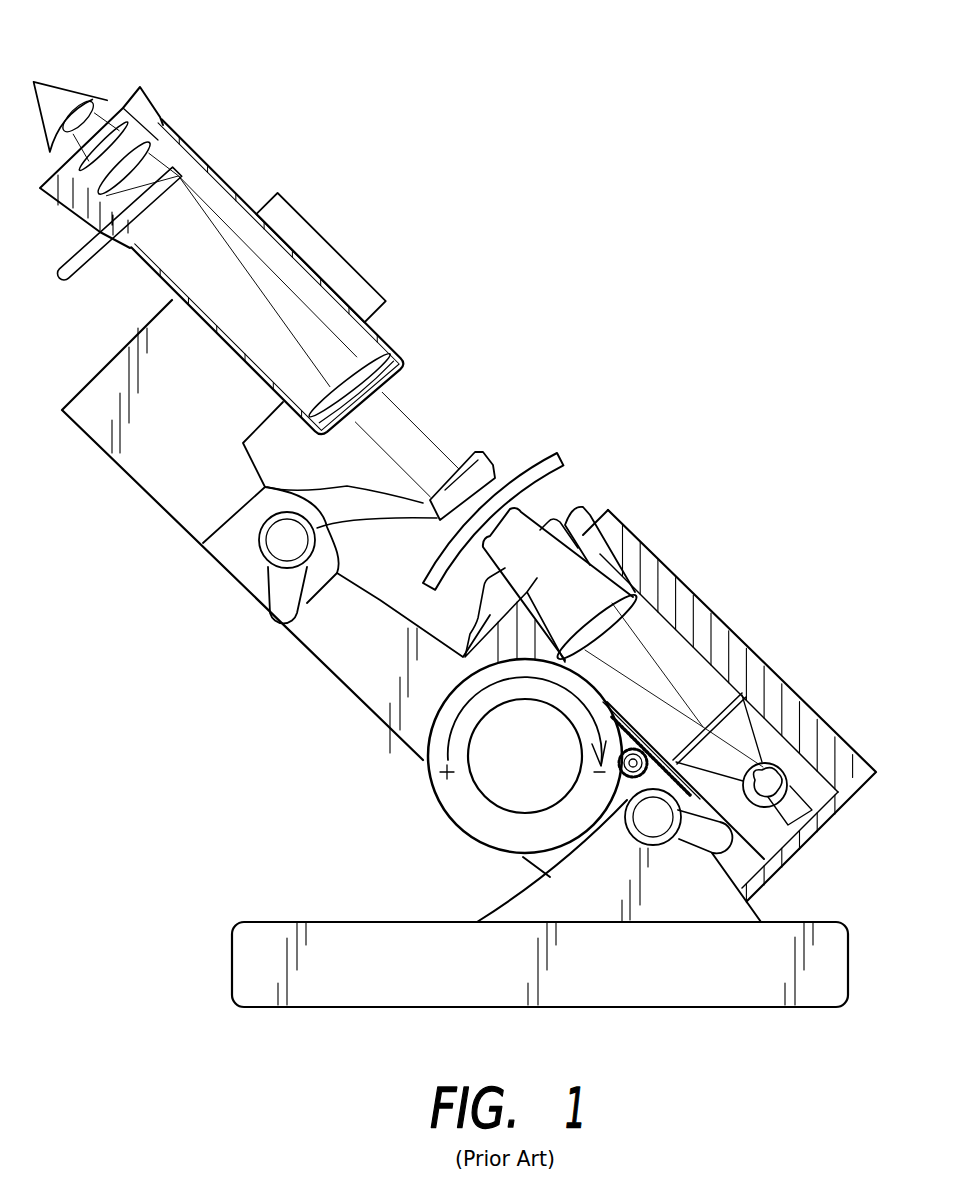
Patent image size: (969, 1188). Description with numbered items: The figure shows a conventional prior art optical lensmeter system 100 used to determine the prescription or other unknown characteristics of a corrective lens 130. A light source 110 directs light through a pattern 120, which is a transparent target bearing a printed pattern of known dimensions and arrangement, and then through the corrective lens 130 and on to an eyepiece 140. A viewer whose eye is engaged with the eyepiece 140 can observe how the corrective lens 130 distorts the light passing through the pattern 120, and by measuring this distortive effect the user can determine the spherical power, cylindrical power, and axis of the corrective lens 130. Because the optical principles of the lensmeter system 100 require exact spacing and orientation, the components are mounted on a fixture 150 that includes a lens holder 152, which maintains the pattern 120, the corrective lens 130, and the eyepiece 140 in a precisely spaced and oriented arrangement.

The optical lensmeter system 100 is at (437, 115).
The light source 110 is at (790, 797).
The pattern 120 is at (722, 723).
The corrective lens 130 is at (562, 452).
The eyepiece 140 is at (160, 113).
The fixture 150 is at (203, 543).
The lens holder 152 is at (383, 490).